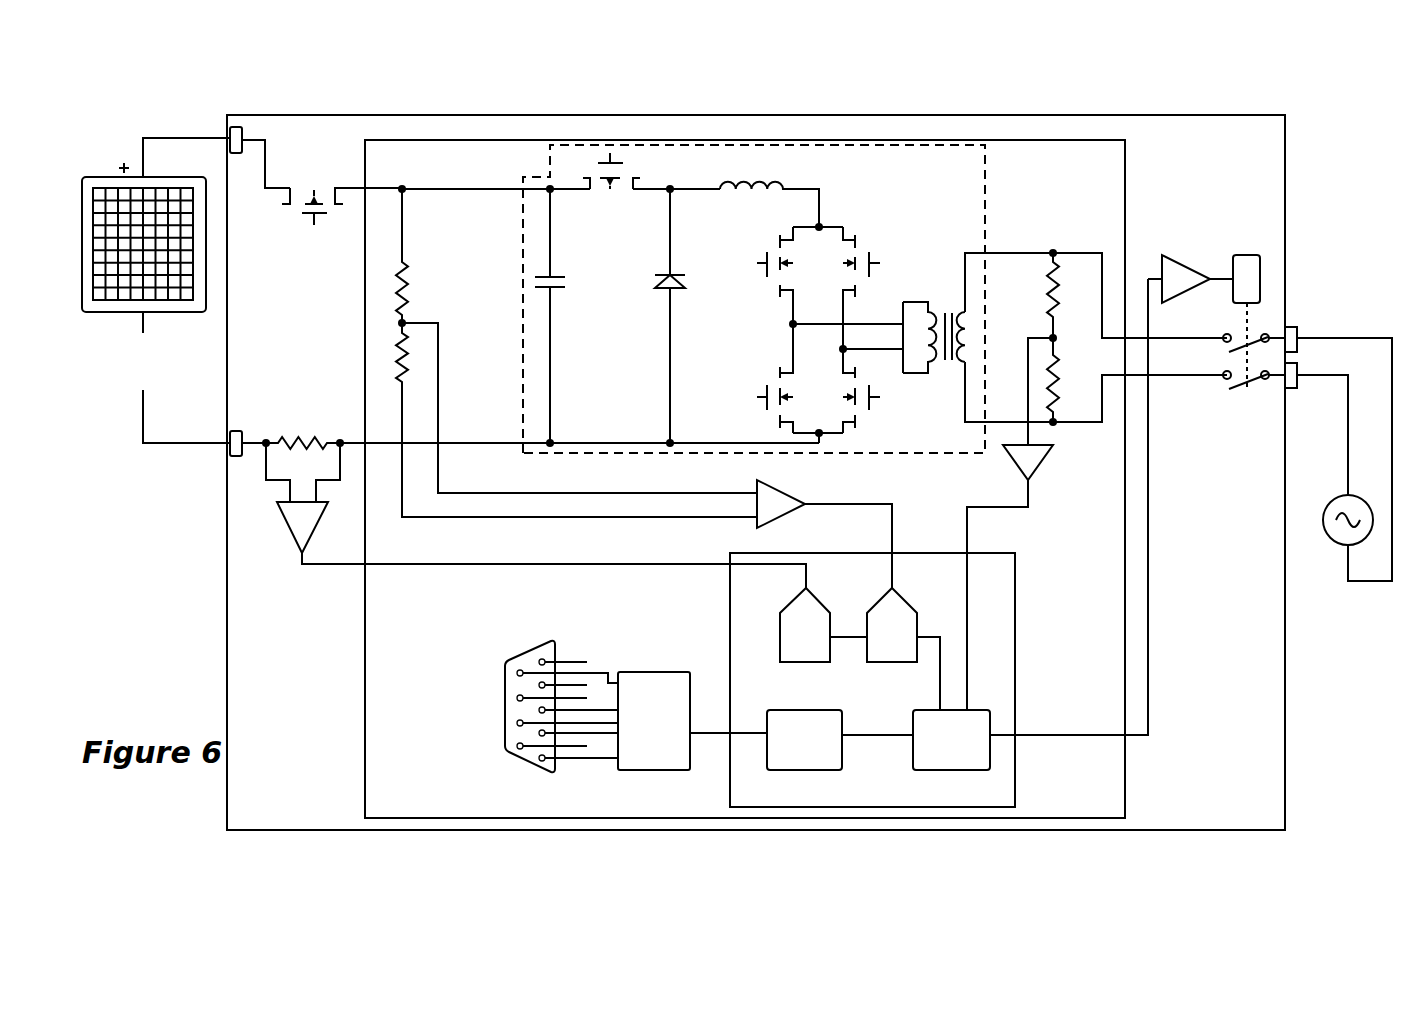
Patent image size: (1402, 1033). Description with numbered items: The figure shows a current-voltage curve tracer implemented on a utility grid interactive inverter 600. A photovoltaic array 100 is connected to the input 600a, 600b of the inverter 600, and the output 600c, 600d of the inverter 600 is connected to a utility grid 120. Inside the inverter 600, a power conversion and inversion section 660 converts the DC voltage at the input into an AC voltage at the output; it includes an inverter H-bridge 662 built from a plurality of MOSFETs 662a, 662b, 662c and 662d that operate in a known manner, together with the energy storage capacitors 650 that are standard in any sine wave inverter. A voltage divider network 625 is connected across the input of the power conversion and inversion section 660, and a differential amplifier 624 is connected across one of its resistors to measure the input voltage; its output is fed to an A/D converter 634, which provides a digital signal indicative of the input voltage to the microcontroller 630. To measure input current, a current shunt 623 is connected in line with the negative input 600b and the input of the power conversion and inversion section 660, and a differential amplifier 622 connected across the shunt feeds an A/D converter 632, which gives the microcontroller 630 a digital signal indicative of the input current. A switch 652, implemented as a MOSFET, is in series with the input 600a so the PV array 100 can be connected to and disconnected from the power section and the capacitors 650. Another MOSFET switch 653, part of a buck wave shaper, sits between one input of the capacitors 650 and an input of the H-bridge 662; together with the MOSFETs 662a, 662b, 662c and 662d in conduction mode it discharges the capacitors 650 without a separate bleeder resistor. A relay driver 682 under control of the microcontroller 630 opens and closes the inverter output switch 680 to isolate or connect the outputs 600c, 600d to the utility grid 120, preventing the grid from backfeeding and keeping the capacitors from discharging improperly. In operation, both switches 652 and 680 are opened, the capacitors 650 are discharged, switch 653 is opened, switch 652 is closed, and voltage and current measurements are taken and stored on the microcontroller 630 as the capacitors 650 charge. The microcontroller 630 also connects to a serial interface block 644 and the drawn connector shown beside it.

The photovoltaic array 100 is at (100, 173).
The utility grid 120 is at (1330, 541).
The utility grid interactive inverter 600 is at (1287, 679).
The input 600a is at (243, 133).
The negative input 600b is at (240, 432).
The output 600c is at (1297, 328).
The output 600d is at (1297, 365).
The differential amplifier 622 is at (287, 527).
The current shunt 623 is at (312, 440).
The differential amplifier 624 is at (777, 482).
The voltage divider network 625 is at (421, 281).
The microcontroller 630 is at (1017, 783).
The A/D converter 632 is at (820, 602).
The A/D converter 634 is at (905, 602).
The serial interface driver 644 is at (642, 668).
The energy storage capacitors 650 is at (565, 282).
The switch 652 is at (324, 180).
The switch 653 is at (639, 165).
The power conversion and inversion section 660 is at (985, 198).
The inverter H-bridge 662 is at (815, 329).
The MOSFET 662a is at (766, 246).
The MOSFET 662b is at (765, 375).
The MOSFET 662c is at (869, 244).
The MOSFET 662d is at (869, 418).
The inverter output switch 680 is at (1247, 255).
The relay driver 682 is at (1183, 262).